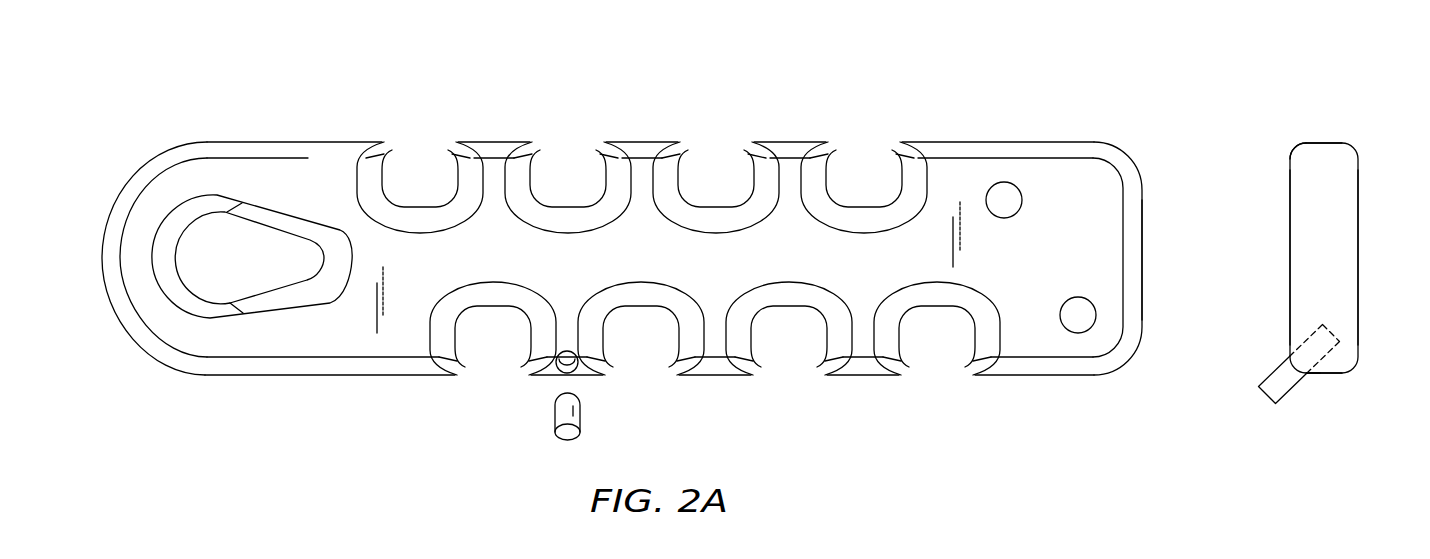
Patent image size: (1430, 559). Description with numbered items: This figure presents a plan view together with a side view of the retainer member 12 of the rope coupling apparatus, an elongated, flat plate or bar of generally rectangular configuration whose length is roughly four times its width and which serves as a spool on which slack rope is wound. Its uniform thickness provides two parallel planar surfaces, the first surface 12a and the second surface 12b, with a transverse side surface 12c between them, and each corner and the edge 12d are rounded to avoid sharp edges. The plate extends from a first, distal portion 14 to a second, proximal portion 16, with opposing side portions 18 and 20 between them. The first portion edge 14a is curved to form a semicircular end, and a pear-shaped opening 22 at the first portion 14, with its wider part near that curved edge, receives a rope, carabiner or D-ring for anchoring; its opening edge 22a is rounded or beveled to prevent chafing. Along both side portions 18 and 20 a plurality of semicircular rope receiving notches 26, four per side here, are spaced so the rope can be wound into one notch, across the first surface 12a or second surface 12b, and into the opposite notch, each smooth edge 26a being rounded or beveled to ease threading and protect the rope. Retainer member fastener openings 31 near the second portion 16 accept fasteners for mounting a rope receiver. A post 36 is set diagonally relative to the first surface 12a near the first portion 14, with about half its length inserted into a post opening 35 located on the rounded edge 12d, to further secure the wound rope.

The retainer member 12 is at (1117, 132).
The first surface 12a is at (702, 275).
The second surface 12b is at (1358, 215).
The transverse side surface 12c is at (1041, 143).
The rounded edge 12d is at (587, 366).
The first portion 14 is at (130, 192).
The first portion edge 14a is at (180, 145).
The second portion 16 is at (1143, 267).
The side portion 18 is at (639, 143).
The side portion 20 is at (866, 360).
The opening 22 is at (198, 274).
The opening edge 22a is at (267, 216).
The rope receiving notch 26 is at (418, 144).
The smooth edge 26a is at (387, 147).
The retainer member fastener opening 31 is at (1004, 197).
The post opening 35 is at (557, 372).
The post 36 is at (578, 410).